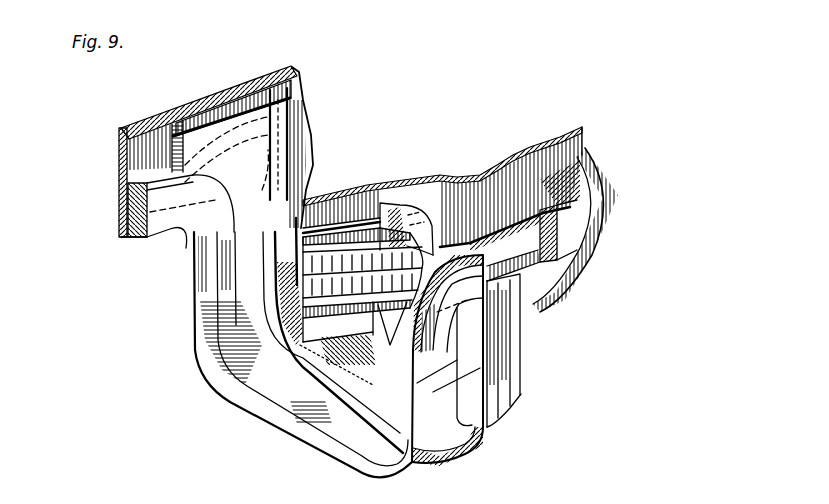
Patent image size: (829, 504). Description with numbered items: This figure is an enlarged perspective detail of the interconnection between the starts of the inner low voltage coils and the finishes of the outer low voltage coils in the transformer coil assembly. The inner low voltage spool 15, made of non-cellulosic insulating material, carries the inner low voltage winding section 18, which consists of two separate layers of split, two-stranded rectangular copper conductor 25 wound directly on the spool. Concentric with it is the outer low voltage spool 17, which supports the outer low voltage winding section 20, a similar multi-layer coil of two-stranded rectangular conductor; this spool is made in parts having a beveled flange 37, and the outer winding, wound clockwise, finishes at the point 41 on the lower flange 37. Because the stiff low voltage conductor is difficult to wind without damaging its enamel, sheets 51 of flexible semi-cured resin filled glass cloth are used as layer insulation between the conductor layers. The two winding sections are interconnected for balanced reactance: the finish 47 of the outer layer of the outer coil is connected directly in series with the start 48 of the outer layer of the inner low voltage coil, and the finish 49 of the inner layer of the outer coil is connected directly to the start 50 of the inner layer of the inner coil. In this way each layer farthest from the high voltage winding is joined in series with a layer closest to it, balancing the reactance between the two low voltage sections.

The inner low voltage spool 15 is at (140, 130).
The outer low voltage spool 17 is at (483, 175).
The inner low voltage winding section 18 is at (127, 212).
The outer low voltage winding section 20 is at (600, 182).
The two-stranded rectangular copper conductor 25 is at (216, 287).
The beveled flange 37 is at (593, 237).
The finish point of outer low voltage winding 41 is at (547, 280).
The finish of outer layer of outer coil 47 is at (443, 455).
The start of outer layer of inner low voltage coil 48 is at (200, 367).
The finish of inner layer of outer low voltage coil 49 is at (521, 403).
The start of inner layer of inner low voltage coil 50 is at (310, 358).
The sheets of layer insulation 51 is at (276, 112).